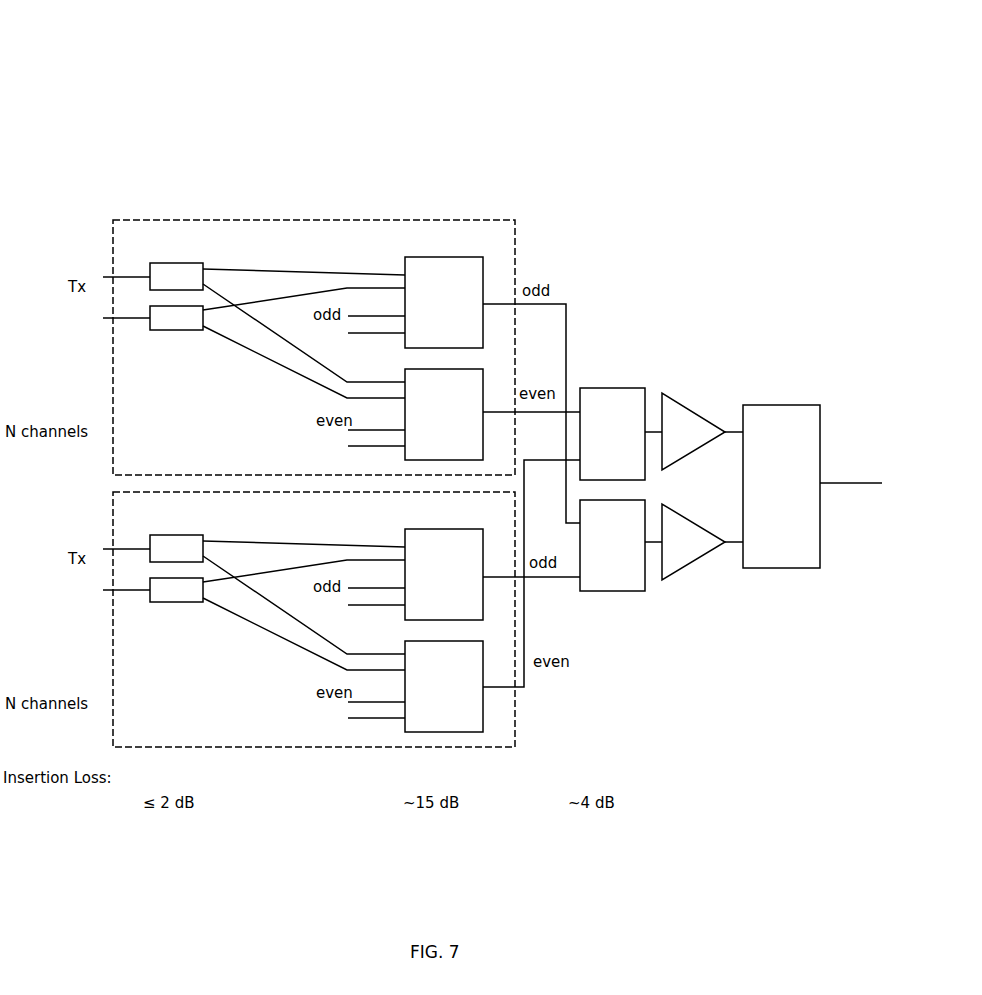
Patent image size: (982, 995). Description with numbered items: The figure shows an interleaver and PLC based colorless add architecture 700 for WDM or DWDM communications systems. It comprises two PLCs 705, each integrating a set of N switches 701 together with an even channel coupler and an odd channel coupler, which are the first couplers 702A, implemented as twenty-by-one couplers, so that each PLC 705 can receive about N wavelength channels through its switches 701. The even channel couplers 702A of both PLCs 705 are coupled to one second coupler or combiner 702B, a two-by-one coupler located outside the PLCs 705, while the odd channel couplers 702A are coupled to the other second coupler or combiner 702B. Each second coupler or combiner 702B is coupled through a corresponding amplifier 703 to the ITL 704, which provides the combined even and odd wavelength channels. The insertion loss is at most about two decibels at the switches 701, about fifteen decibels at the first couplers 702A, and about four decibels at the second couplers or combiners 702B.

The interleaver and PLC based colorless add architecture 700 is at (118, 53).
The switch 701 is at (165, 290).
The first coupler 702A is at (405, 344).
The second coupler or combiner 702B is at (586, 388).
The amplifier 703 is at (676, 401).
The ITL 704 is at (820, 440).
The PLC 705 is at (515, 232).